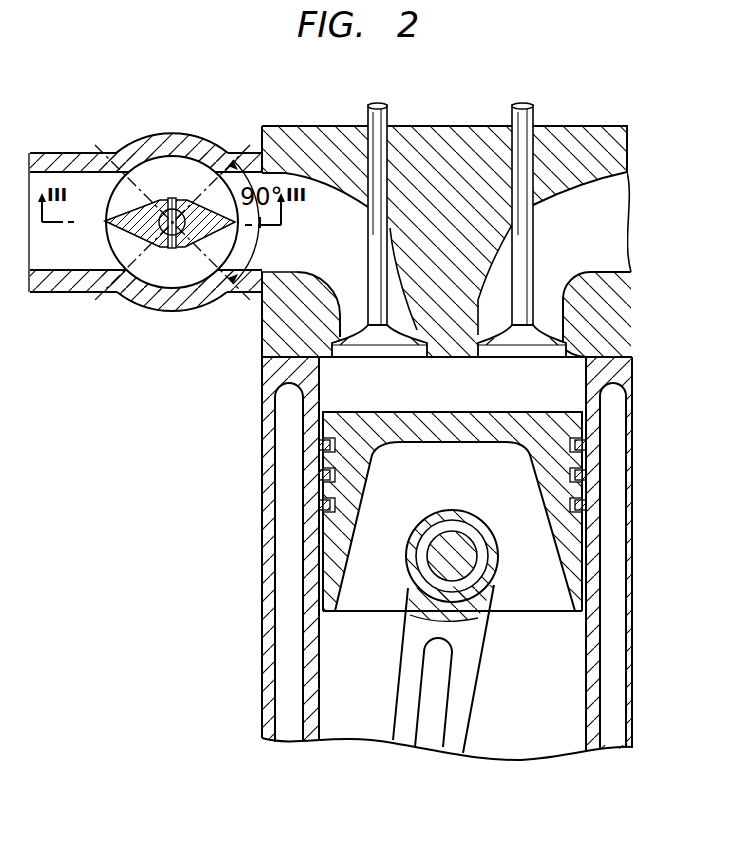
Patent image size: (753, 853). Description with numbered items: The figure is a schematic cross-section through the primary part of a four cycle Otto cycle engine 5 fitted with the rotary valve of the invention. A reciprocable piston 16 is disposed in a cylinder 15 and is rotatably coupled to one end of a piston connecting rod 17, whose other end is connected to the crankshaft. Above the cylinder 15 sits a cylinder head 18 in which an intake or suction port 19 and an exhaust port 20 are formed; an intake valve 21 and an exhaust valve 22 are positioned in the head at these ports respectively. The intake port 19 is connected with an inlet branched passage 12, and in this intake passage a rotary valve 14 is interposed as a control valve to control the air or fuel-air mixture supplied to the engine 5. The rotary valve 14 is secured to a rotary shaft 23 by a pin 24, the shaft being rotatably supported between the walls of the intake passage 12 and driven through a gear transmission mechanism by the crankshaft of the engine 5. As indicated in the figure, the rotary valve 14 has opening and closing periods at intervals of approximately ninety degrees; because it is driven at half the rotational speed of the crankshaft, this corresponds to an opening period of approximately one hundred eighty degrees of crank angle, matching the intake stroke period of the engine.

The engine 5 is at (586, 118).
The inlet branched passage 12 is at (55, 162).
The rotary valve 14 is at (137, 232).
The cylinder 15 is at (312, 487).
The piston 16 is at (337, 417).
The piston connecting rod 17 is at (405, 732).
The cylinder head 18 is at (275, 338).
The intake port 19 is at (353, 308).
The exhaust port 20 is at (552, 303).
The intake valve 21 is at (376, 247).
The exhaust valve 22 is at (534, 227).
The rotary shaft 23 is at (173, 198).
The pin 24 is at (168, 248).